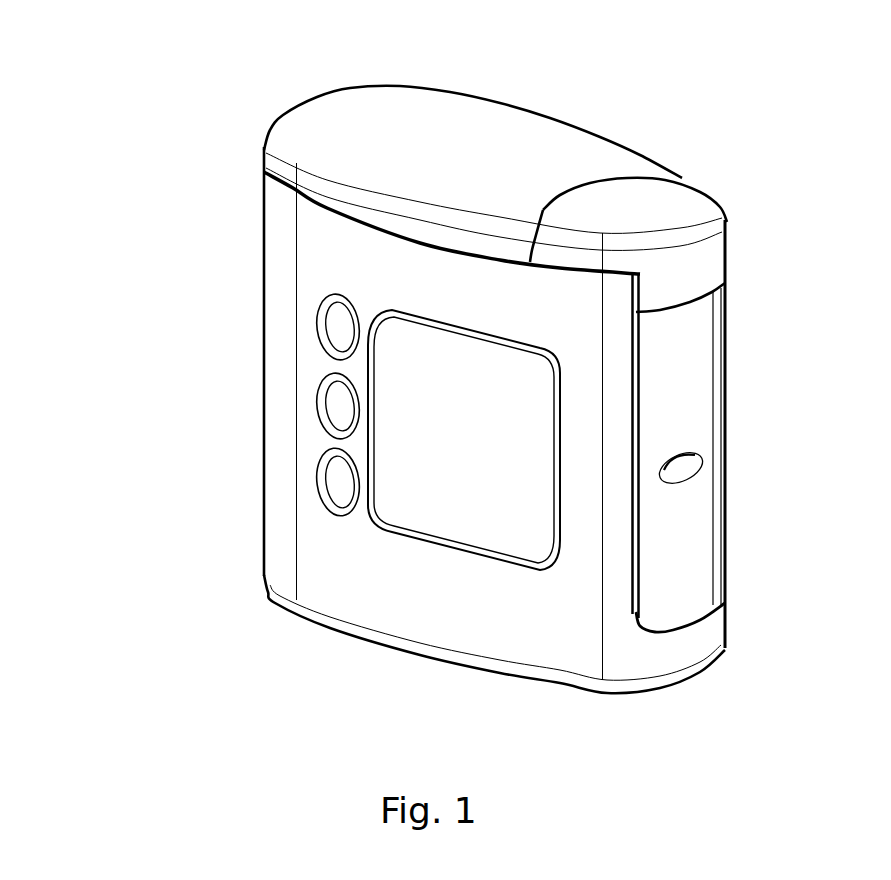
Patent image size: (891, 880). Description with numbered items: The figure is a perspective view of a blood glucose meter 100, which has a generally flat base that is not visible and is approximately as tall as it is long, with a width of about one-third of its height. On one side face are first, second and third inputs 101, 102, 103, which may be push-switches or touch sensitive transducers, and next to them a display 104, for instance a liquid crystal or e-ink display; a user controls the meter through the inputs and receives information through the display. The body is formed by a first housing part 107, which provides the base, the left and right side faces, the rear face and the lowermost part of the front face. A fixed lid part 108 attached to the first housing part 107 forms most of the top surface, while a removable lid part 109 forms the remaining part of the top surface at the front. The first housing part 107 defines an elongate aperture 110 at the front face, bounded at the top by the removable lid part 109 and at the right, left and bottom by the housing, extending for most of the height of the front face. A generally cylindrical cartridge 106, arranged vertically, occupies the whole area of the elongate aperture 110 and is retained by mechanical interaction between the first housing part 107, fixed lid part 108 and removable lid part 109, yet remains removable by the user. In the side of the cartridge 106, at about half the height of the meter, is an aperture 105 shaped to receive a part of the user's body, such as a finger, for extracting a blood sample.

The blood glucose meter 100 is at (126, 96).
The first input 101 is at (332, 327).
The second input 102 is at (333, 406).
The third input 103 is at (332, 481).
The display 104 is at (430, 505).
The aperture 105 is at (683, 467).
The cartridge 106 is at (685, 358).
The first housing part 107 is at (562, 630).
The fixed lid part 108 is at (472, 140).
The removable lid part 109 is at (668, 222).
The elongate aperture 110 is at (672, 553).